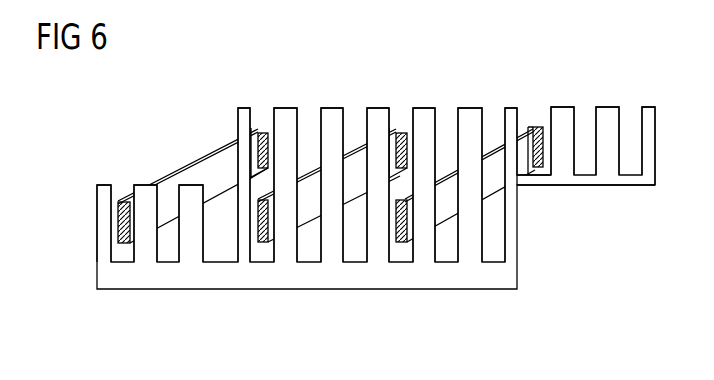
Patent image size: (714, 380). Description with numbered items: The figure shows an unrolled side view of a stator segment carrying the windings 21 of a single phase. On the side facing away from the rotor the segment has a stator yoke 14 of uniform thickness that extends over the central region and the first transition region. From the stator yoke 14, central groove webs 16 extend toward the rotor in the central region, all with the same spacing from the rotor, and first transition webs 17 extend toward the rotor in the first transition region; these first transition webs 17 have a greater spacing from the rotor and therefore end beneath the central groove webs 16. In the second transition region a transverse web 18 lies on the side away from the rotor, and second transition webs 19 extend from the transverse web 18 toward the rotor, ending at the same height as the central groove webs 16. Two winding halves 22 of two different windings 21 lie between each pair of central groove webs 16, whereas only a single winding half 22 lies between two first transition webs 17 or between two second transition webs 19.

The stator yoke 14 is at (146, 282).
The central groove webs 16 is at (285, 107).
The first transition webs 17 is at (103, 184).
The transverse web 18 is at (585, 186).
The second transition webs 19 is at (563, 107).
The windings 21 is at (217, 147).
The winding halves 22 is at (118, 222).